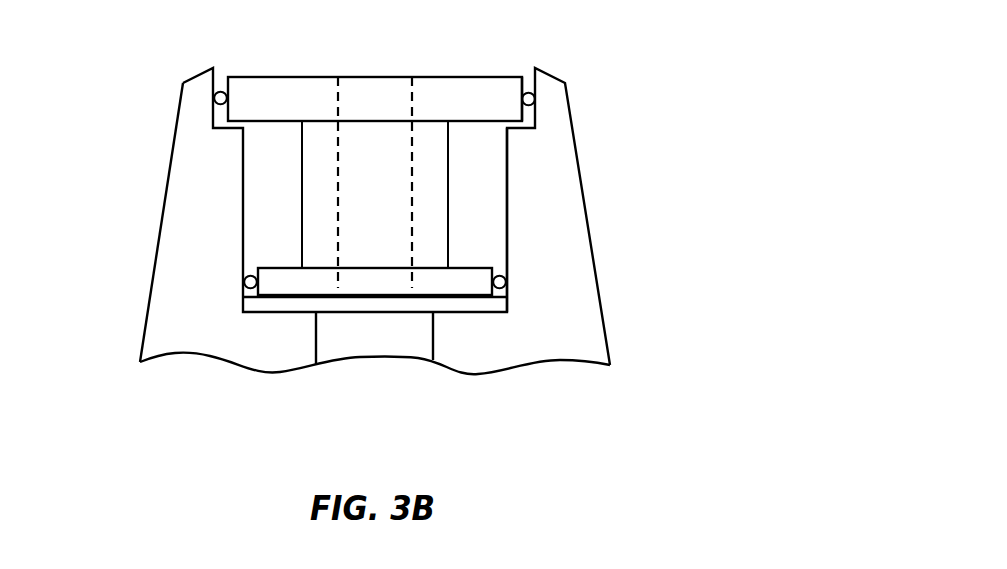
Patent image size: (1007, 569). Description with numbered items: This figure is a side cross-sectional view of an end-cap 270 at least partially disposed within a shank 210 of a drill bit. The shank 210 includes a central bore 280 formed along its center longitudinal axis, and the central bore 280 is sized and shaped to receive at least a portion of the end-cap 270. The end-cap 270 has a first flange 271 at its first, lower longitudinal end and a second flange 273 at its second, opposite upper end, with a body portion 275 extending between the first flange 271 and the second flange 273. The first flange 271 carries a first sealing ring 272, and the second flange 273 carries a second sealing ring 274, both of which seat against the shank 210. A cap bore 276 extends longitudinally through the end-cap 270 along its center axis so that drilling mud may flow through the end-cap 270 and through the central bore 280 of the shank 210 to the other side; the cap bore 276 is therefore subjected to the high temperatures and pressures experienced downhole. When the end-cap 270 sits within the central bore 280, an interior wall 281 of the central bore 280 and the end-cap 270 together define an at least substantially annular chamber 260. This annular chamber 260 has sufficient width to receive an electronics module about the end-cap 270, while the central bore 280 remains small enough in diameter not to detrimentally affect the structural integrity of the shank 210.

The shank 210 is at (233, 337).
The annular chamber 260 is at (278, 196).
The end-cap 270 is at (446, 66).
The first flange 271 is at (477, 275).
The first sealing ring 272 is at (244, 282).
The second flange 273 is at (508, 90).
The second sealing ring 274 is at (214, 98).
The body portion 275 is at (448, 238).
The cap bore 276 is at (338, 97).
The central bore 280 is at (368, 338).
The interior wall 281 is at (496, 157).